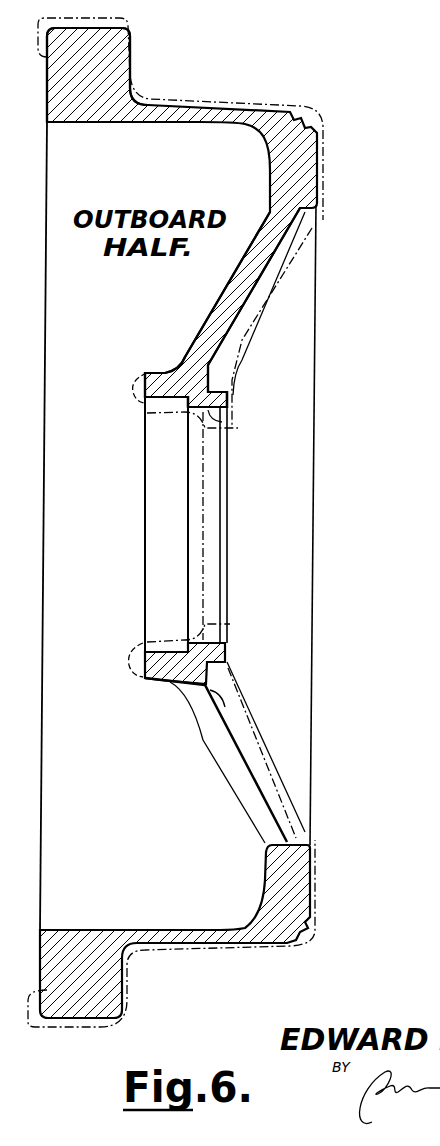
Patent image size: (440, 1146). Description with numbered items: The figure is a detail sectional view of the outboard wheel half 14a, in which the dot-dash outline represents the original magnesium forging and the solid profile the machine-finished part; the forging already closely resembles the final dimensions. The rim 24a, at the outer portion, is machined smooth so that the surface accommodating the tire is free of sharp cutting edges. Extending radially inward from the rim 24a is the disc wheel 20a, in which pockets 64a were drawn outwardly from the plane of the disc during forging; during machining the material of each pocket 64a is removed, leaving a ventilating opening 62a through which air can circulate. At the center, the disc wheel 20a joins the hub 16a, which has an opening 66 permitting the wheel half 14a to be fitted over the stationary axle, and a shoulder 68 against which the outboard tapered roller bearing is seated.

The outboard wheel half 14a is at (305, 165).
The rim 24a is at (178, 112).
The disc wheel 20a is at (240, 278).
The hub portion 16a is at (163, 372).
The opening 66 is at (192, 410).
The shoulder 68 is at (185, 400).
The ventilating opening 62a is at (170, 686).
The pocket 64a is at (262, 762).